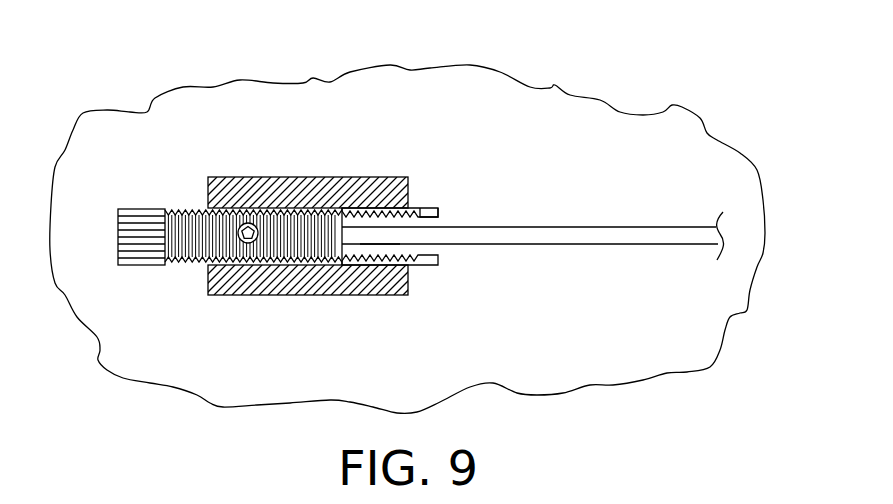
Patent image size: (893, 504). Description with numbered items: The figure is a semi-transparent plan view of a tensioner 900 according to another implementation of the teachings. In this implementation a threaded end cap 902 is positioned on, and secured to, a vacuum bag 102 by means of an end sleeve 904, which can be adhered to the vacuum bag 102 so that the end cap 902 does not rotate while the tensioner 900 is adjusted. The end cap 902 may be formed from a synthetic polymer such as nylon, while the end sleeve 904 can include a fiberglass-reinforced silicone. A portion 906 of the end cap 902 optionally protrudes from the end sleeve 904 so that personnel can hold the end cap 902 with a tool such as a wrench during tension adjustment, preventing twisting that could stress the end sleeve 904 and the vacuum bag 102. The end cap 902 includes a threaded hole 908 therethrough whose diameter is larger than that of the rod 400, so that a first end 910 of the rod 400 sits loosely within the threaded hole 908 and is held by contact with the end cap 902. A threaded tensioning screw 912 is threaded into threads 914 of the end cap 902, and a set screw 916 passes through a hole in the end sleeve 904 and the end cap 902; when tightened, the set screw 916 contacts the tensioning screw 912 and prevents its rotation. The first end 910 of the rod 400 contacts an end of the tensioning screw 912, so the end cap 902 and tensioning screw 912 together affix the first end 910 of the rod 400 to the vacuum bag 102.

The tensioner 900 is at (337, 96).
The vacuum bag 102 is at (115, 348).
The threaded tensioning screw 912 is at (141, 208).
The first end of the rod 910 is at (355, 224).
The set screw 916 is at (242, 222).
The end sleeve 904 is at (290, 176).
The portion of the end cap 906 is at (432, 192).
The threaded hole 908 is at (454, 217).
The threaded end cap 902 is at (440, 262).
The rod 400 is at (611, 232).
The threads 914 is at (381, 248).